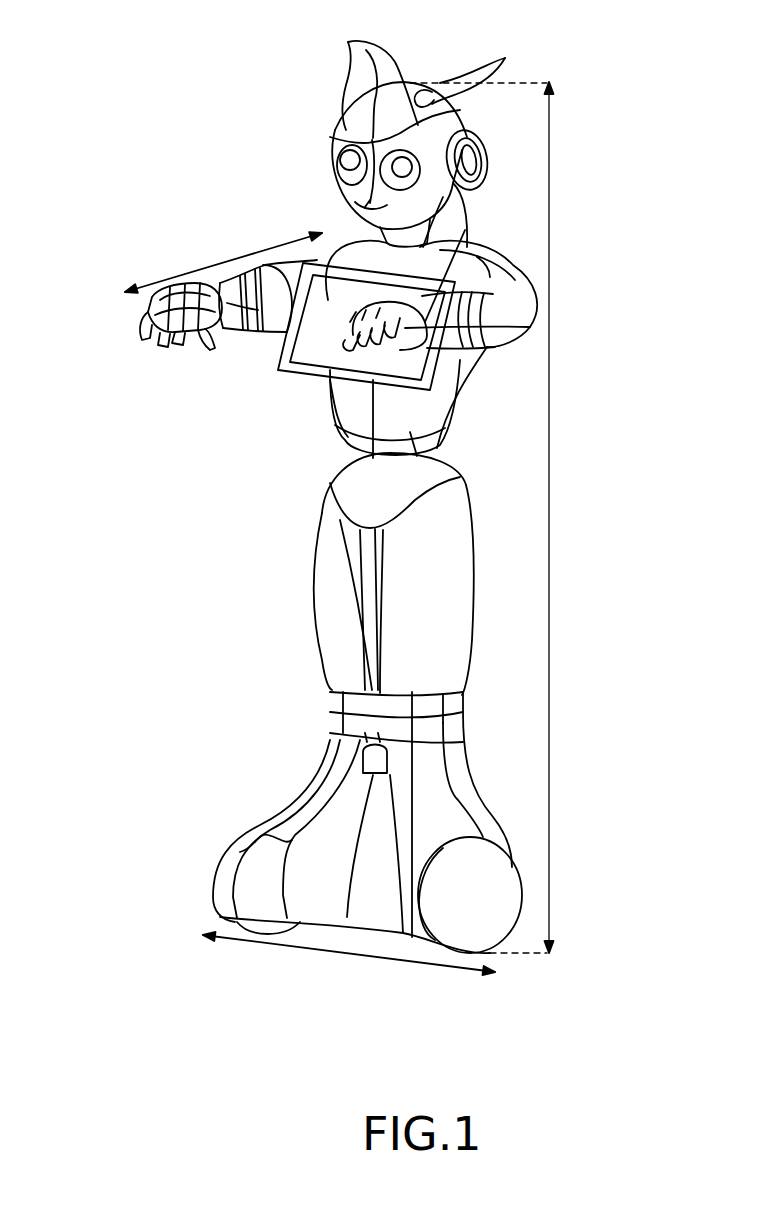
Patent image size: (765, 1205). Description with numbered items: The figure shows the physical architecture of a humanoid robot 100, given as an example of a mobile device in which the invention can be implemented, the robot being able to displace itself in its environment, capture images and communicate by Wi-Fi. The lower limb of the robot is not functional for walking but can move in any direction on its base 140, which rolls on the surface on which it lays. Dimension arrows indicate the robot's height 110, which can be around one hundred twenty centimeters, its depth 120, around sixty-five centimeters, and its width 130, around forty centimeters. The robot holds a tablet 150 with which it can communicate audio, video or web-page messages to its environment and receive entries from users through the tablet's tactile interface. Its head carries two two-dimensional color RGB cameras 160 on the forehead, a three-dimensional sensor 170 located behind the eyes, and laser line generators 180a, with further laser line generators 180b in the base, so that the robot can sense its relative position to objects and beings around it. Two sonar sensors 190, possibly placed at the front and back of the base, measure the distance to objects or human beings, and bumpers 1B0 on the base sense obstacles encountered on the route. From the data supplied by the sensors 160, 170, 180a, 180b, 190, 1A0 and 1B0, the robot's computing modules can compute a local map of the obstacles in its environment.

The robot 100 is at (222, 585).
The height 110 is at (550, 478).
The depth 120 is at (205, 258).
The width 130 is at (323, 950).
The base 140 is at (170, 870).
The tablet 150 is at (283, 370).
The 2D color RGB cameras 160 is at (360, 205).
The 3D sensor 170 is at (320, 128).
The laser line generators in the head 180a is at (348, 42).
The laser line generators in the base 180b is at (387, 762).
The sonar sensors 190 is at (355, 813).
The sensors 1A0 is at (455, 135).
The bumpers 1B0 is at (420, 880).